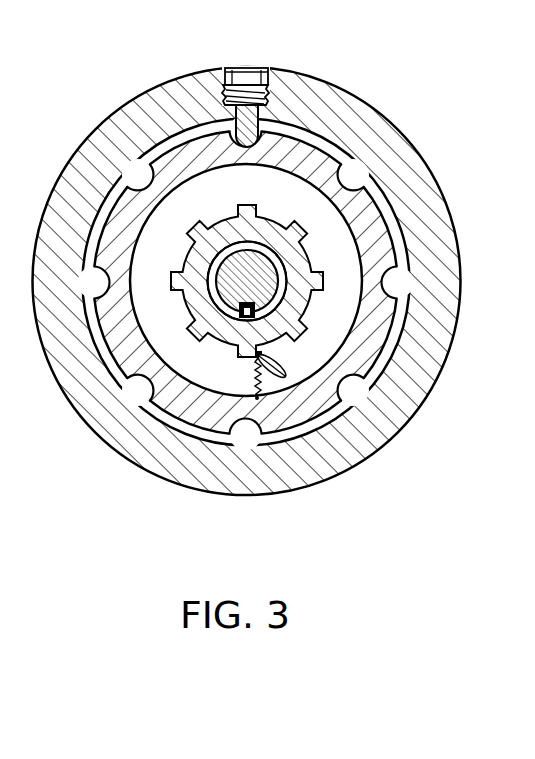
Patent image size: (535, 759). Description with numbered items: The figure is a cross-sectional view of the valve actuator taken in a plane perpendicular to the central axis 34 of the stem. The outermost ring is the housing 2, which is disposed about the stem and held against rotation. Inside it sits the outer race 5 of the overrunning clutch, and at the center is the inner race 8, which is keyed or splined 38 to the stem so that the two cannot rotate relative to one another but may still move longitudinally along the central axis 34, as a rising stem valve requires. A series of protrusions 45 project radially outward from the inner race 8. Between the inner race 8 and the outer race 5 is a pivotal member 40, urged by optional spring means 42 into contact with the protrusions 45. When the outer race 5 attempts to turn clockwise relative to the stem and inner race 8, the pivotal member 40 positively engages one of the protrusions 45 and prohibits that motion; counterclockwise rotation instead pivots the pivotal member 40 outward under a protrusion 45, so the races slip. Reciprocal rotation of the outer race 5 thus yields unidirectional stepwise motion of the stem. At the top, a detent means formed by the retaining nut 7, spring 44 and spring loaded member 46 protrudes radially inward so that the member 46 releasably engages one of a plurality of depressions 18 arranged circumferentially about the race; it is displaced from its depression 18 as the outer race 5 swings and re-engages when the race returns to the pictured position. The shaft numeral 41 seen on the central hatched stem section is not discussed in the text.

The housing 2 is at (411, 409).
The outer race 5 is at (131, 253).
The depressions 18 is at (349, 181).
The retaining nut 7 is at (247, 79).
The spring 44 is at (263, 88).
The spring loaded member 46 is at (255, 118).
The inner race 8 is at (203, 277).
The protrusions 45 is at (316, 277).
The central axis 34 is at (252, 277).
The shaft 41 is at (268, 292).
The key or spline 38 is at (259, 345).
The pivotal member 40 is at (258, 358).
The spring means 42 is at (268, 380).